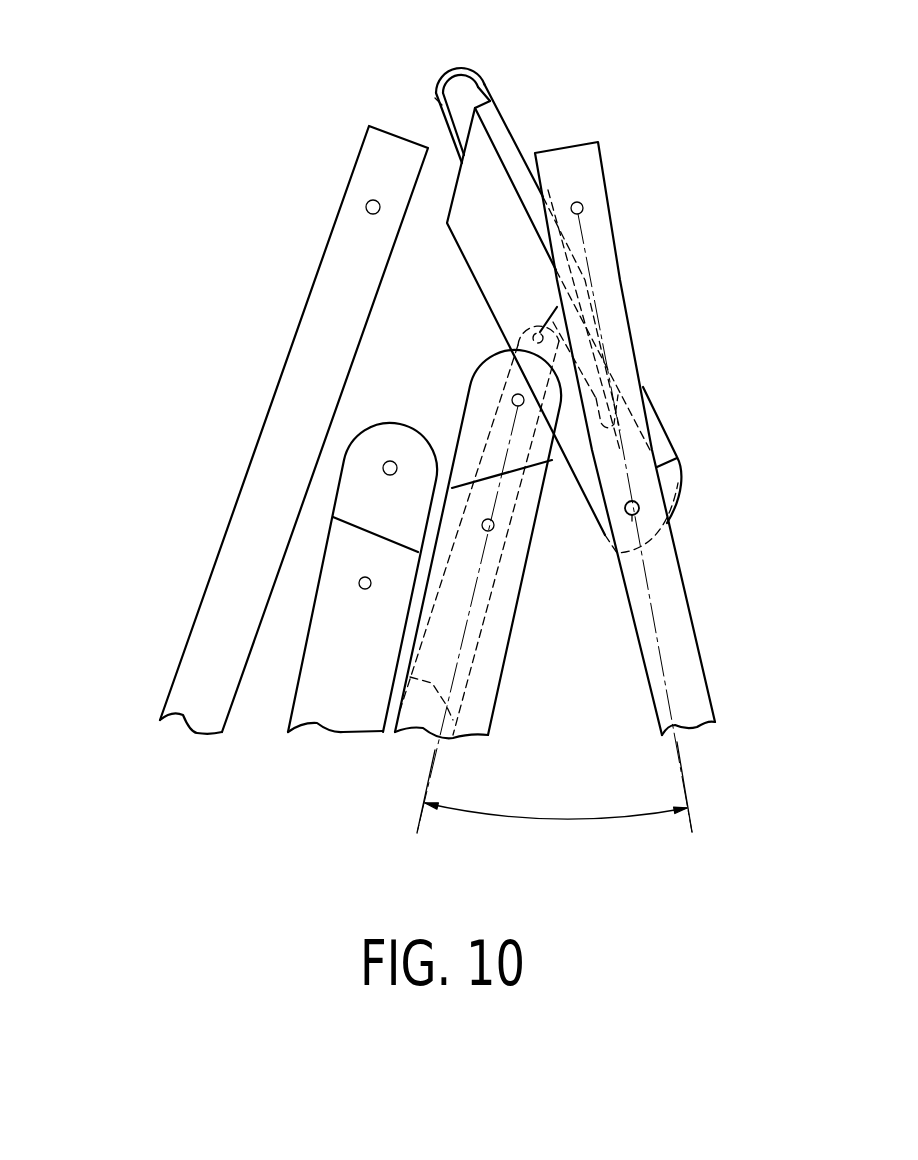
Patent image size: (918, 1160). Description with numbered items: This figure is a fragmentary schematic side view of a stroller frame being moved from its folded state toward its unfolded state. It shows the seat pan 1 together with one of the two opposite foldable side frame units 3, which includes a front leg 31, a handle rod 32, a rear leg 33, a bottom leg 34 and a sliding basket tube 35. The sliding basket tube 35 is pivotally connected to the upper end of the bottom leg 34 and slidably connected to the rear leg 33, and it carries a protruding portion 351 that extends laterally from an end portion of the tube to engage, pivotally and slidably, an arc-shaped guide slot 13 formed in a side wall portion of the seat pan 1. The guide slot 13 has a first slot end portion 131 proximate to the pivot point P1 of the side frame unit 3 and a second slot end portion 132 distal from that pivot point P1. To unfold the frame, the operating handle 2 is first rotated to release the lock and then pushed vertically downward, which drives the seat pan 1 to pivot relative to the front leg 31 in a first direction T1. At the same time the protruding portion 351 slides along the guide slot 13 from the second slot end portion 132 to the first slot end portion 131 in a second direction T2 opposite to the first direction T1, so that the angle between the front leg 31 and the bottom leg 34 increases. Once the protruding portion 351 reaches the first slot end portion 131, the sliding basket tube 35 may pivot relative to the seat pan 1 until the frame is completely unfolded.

The seat pan 1 is at (680, 468).
The operating handle 2 is at (440, 73).
The foldable side frame unit 3 is at (227, 315).
The guide slot 13 is at (590, 375).
The first slot end portion 131 is at (607, 413).
The second slot end portion 132 is at (585, 335).
The front leg 31 is at (683, 643).
The handle rod 32 is at (255, 548).
The rear leg 33 is at (325, 688).
The bottom leg 34 is at (487, 633).
The sliding basket tube 35 is at (634, 299).
The protruding portion 351 is at (553, 312).
The pivot point P1 is at (640, 503).
The first direction T1 is at (637, 120).
The second direction T2 is at (535, 303).